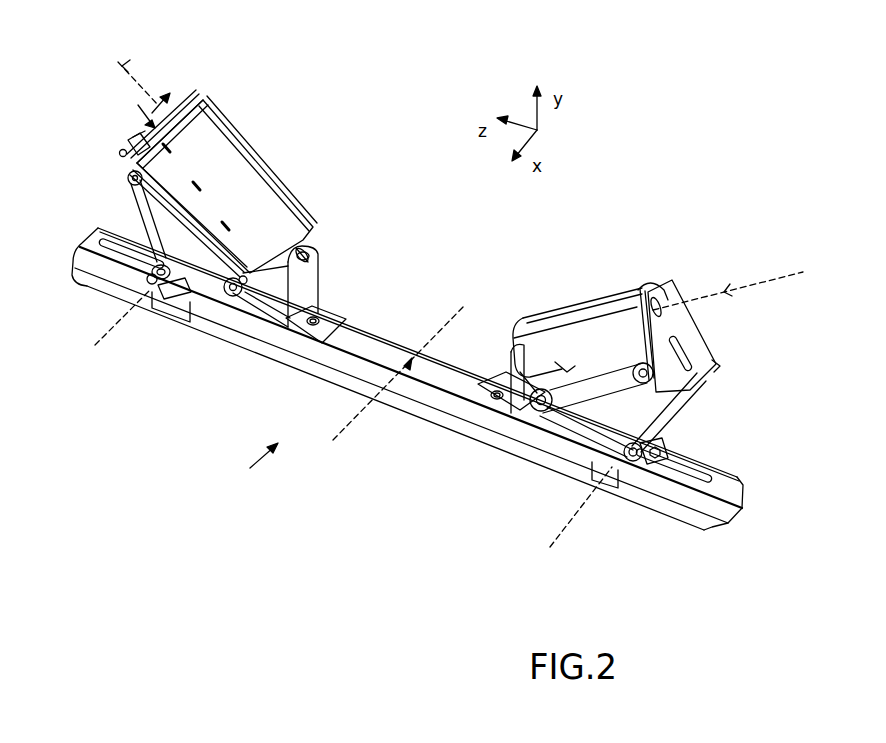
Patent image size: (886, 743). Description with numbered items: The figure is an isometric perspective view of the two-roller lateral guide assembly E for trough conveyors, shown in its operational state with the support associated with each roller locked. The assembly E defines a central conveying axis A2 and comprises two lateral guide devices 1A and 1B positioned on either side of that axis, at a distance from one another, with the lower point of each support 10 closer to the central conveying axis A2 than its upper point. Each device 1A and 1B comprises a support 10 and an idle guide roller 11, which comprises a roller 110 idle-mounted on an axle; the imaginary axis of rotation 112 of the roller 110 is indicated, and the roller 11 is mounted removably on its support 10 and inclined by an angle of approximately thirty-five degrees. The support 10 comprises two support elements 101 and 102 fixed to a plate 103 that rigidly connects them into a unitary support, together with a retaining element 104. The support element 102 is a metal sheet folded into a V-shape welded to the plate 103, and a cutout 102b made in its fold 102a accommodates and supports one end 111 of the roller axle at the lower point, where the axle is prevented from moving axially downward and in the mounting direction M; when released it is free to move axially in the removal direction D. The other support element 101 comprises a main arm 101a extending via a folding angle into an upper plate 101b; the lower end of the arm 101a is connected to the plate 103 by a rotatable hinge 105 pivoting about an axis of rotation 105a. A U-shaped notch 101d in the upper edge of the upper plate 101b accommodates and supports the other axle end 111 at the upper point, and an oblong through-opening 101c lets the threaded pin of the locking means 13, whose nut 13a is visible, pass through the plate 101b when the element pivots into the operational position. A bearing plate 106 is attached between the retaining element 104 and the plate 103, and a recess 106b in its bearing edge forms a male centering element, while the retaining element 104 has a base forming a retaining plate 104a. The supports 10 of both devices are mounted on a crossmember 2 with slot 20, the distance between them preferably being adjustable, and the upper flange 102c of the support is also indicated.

The crossmember 2 is at (388, 382).
The rail slot 20 is at (102, 244).
The support 10 is at (326, 283).
The guide roller 11 is at (236, 172).
The locking means 13 is at (127, 143).
The nut 13a is at (122, 152).
The support element 101 is at (142, 276).
The main arm 101a is at (143, 196).
The upper plate 101b is at (150, 118).
The oblong through-opening 101c is at (682, 340).
The U-shaped notch 101d is at (642, 296).
The support element 102 is at (268, 300).
The fold 102a is at (282, 262).
The cutout 102b is at (320, 256).
The upper flange 102c is at (178, 106).
The plate 103 is at (226, 303).
The retaining element 104 is at (190, 285).
The retaining plate 104a is at (570, 373).
The rotatable hinge 105 is at (172, 284).
The axis of rotation 105a is at (86, 352).
The bearing plate 106 is at (595, 412).
The recess 106b is at (670, 412).
The roller 110 is at (216, 122).
The end of the axle 111 is at (302, 248).
The axis of rotation 112 is at (108, 62).
The lateral guide device 1A is at (322, 155).
The lateral guide device 1B is at (606, 270).
The central conveying axis A2 is at (352, 440).
The removal direction D is at (166, 91).
The mounting direction M is at (139, 108).
The lateral guide assembly E is at (254, 460).